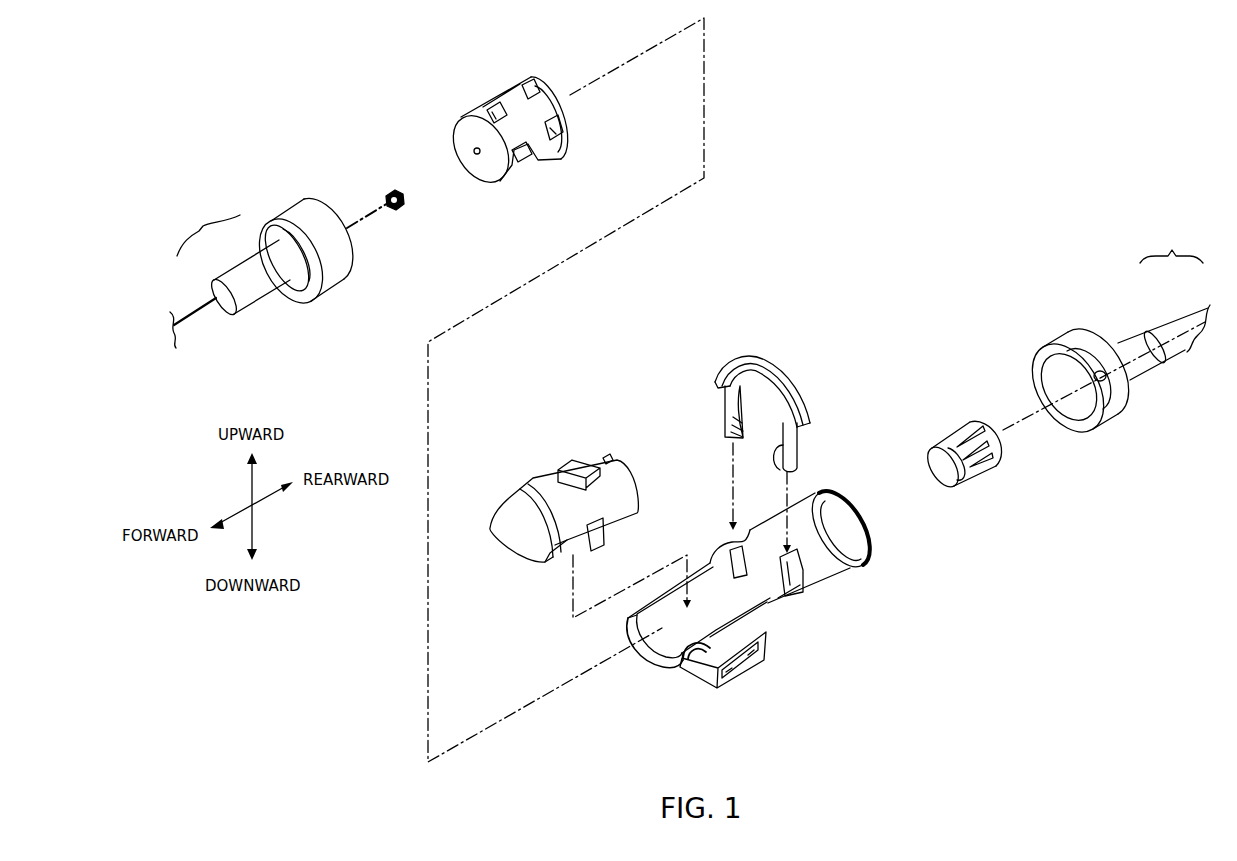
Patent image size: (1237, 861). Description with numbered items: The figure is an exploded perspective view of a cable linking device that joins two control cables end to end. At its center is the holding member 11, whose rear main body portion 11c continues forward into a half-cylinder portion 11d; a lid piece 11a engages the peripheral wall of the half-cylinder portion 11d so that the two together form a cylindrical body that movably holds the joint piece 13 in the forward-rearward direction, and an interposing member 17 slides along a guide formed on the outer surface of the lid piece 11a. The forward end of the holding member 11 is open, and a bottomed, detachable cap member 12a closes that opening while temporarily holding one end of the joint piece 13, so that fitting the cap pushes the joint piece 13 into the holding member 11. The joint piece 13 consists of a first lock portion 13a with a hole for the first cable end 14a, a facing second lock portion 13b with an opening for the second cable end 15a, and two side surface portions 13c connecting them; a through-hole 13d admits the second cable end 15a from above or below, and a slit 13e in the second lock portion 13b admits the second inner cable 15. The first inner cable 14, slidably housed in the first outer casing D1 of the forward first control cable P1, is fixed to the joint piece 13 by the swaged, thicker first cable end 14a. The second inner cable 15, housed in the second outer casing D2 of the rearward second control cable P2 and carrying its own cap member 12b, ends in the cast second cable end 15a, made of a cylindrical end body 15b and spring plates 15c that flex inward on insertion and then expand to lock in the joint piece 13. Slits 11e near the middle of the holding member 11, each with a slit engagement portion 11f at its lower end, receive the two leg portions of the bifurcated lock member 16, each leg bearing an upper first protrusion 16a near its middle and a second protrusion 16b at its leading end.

The holding member 11 is at (771, 586).
The lid piece 11a is at (545, 478).
The main body portion 11c is at (830, 542).
The half-cylinder portion 11d is at (765, 620).
The slits 11e is at (730, 536).
The slit engagement portion 11f is at (798, 604).
The cap member 12a is at (287, 207).
The cap member 12b is at (1064, 346).
The joint piece 13 is at (528, 101).
The first lock portion 13a is at (474, 148).
The second lock portion 13b is at (562, 110).
The side surface portions 13c is at (530, 150).
The through-hole 13d is at (505, 98).
The slit 13e is at (536, 80).
The first inner cable 14 is at (198, 312).
The first cable end 14a is at (392, 188).
The second inner cable 15 is at (1188, 322).
The second cable end 15a is at (1001, 453).
The end body 15b is at (946, 488).
The spring plates 15c is at (970, 418).
The lock member 16 is at (775, 395).
The first protrusion 16a is at (725, 428).
The second protrusion 16b is at (738, 444).
The interposing member 17 is at (583, 458).
The first control cable P1 is at (208, 230).
The first outer casing D1 is at (227, 278).
The second control cable P2 is at (1171, 246).
The second outer casing D2 is at (1153, 324).